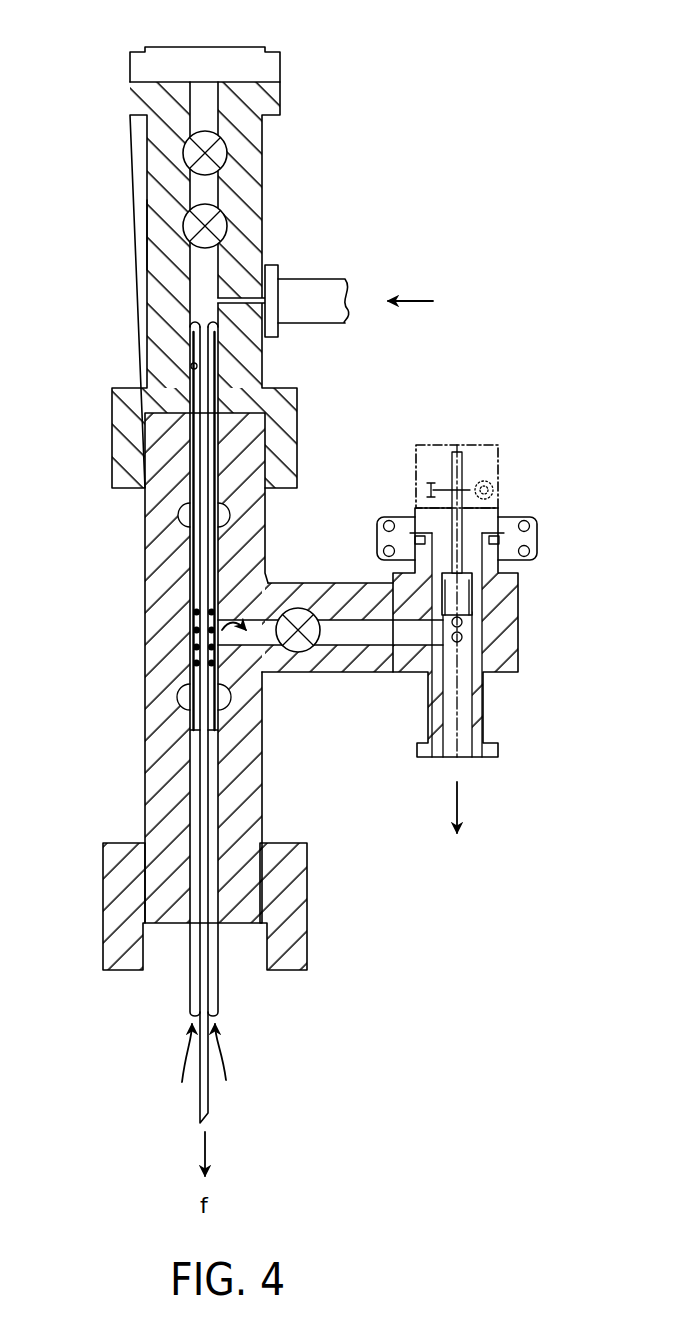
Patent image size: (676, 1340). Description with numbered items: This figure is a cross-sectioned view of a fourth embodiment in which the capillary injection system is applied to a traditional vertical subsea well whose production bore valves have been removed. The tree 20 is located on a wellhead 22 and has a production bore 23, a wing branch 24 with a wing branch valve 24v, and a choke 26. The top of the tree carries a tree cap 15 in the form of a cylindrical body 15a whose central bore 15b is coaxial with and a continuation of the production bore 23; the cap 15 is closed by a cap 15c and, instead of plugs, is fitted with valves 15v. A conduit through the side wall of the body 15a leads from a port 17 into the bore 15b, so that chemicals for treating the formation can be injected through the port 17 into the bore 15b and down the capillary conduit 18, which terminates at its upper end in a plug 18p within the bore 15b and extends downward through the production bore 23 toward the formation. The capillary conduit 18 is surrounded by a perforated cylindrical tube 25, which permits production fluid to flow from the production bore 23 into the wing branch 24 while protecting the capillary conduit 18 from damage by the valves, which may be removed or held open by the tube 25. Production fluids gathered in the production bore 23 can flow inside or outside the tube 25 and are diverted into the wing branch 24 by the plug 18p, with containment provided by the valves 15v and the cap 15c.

The tree cap 15 is at (143, 164).
The cylindrical body 15a is at (147, 235).
The bore 15b is at (203, 295).
The cap 15c is at (205, 47).
The valves 15v is at (212, 152).
The port 17 is at (318, 290).
The capillary conduit 18 is at (209, 1105).
The plug 18p is at (191, 364).
The tree 20 is at (144, 565).
The wellhead 22 is at (252, 955).
The production bore 23 is at (216, 793).
The wing branch 24 is at (360, 637).
The wing branch valve 24v is at (300, 608).
The perforated cylindrical tube 25 is at (183, 627).
The choke 26 is at (505, 453).